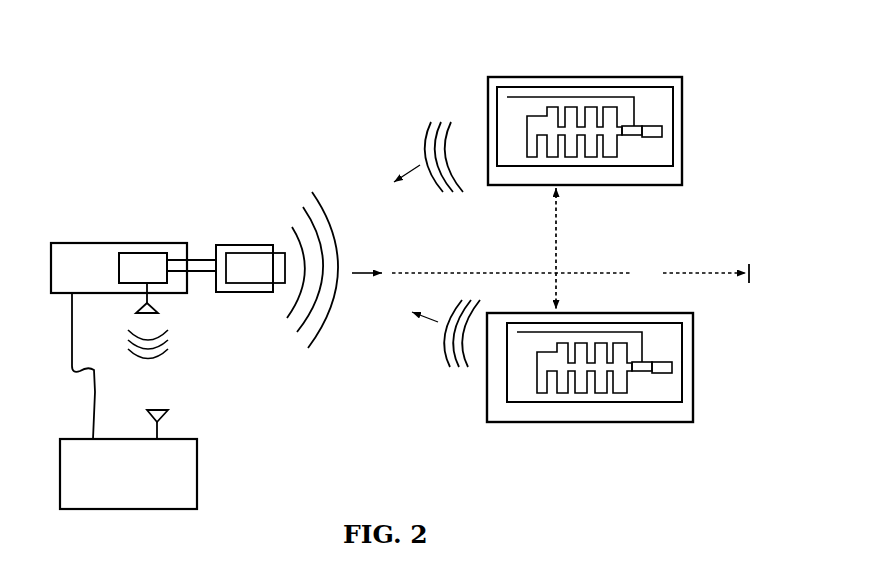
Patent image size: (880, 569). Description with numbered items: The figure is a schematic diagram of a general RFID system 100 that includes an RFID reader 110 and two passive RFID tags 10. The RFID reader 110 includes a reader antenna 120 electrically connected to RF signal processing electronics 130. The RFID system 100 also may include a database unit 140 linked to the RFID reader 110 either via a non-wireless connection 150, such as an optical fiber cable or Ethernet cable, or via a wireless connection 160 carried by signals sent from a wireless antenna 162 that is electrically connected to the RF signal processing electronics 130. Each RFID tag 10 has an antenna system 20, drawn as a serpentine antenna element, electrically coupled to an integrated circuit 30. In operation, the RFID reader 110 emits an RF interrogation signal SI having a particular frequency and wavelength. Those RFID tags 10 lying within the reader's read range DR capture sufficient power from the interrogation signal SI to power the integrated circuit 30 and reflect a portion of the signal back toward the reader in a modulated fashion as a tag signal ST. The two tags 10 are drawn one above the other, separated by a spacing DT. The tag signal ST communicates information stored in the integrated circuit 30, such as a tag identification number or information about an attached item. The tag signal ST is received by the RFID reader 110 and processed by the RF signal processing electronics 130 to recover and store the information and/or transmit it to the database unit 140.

The RFID system 100 is at (204, 92).
The RFID reader 110 is at (98, 243).
The reader antenna 120 is at (231, 226).
The RF signal processing electronics 130 is at (158, 279).
The database unit 140 is at (143, 485).
The non-wireless connection 150 is at (72, 341).
The wireless connection 160 is at (170, 322).
The wireless antenna 162 is at (158, 313).
The passive RFID tag 10 is at (652, 63).
The antenna system 20 is at (624, 150).
The integrated circuit 30 is at (652, 137).
The RF interrogation signal SI is at (313, 347).
The tag signal ST is at (470, 195).
The tag separation distance DT is at (557, 248).
The read range DR is at (550, 275).